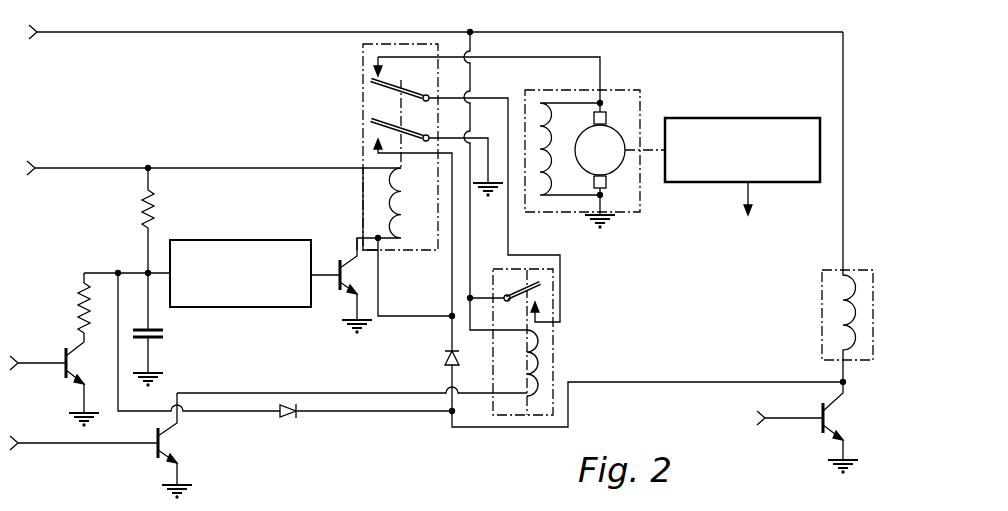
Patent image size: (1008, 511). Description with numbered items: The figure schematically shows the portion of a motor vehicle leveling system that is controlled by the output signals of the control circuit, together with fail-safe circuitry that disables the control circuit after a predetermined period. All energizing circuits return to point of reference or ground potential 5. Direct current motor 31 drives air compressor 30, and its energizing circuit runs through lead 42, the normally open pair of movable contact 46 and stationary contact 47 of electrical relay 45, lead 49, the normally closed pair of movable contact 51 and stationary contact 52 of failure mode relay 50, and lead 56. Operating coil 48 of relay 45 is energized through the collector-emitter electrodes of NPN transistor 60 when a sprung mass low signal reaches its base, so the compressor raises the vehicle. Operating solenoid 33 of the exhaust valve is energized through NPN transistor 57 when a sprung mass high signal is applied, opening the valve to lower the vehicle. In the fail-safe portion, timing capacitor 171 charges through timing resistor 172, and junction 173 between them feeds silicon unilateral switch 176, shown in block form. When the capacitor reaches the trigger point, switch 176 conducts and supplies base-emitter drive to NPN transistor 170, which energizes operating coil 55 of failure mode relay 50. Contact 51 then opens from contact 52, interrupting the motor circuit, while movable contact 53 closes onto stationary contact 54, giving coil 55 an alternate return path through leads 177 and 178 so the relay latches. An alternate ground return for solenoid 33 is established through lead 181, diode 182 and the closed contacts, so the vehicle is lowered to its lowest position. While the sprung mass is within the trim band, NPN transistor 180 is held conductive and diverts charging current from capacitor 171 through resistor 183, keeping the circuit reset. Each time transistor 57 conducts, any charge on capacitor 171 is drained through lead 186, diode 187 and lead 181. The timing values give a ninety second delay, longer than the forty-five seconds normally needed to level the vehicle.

The point of reference or ground potential 5 is at (88, 410).
The air compressor 30 is at (790, 125).
The direct current motor 31 is at (611, 164).
The operating solenoid 33 is at (830, 272).
The lead 42 is at (478, 79).
The electrical relay 45 is at (546, 336).
The movable contact 46 is at (542, 284).
The stationary contact 47 is at (545, 306).
The operating coil 48 is at (538, 372).
The lead 49 is at (510, 242).
The failure mode relay 50 is at (423, 181).
The movable contact 51 is at (370, 86).
The stationary contact 52 is at (372, 68).
The movable contact 53 is at (372, 128).
The stationary contact 54 is at (370, 147).
The operating coil 55 is at (395, 205).
The lead 56 is at (595, 52).
The NPN transistor 57 is at (820, 428).
The NPN transistor 60 is at (170, 439).
The NPN transistor 170 is at (338, 262).
The timing capacitor 171 is at (162, 340).
The timing resistor 172 is at (155, 195).
The junction 173 is at (147, 270).
The silicon unilateral switch 176 is at (235, 306).
The lead 177 is at (428, 326).
The lead 178 is at (452, 290).
The NPN transistor 180 is at (66, 375).
The lead 181 is at (658, 380).
The diode 182 is at (443, 358).
The resistor 183 is at (84, 280).
The lead 186 is at (246, 414).
The diode 187 is at (298, 413).